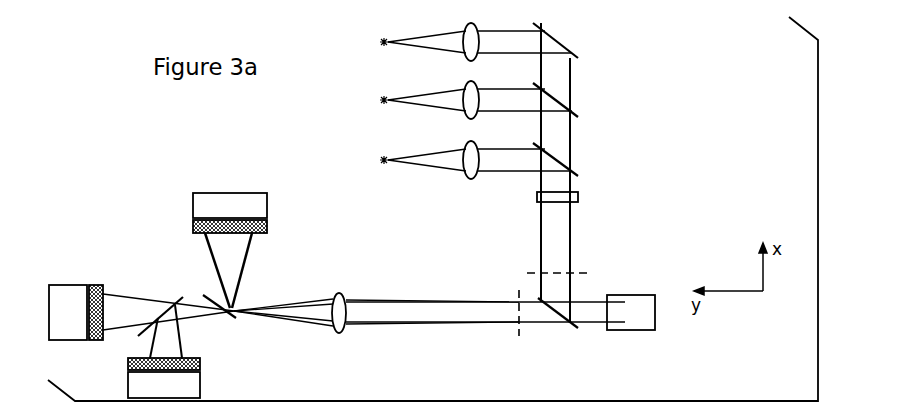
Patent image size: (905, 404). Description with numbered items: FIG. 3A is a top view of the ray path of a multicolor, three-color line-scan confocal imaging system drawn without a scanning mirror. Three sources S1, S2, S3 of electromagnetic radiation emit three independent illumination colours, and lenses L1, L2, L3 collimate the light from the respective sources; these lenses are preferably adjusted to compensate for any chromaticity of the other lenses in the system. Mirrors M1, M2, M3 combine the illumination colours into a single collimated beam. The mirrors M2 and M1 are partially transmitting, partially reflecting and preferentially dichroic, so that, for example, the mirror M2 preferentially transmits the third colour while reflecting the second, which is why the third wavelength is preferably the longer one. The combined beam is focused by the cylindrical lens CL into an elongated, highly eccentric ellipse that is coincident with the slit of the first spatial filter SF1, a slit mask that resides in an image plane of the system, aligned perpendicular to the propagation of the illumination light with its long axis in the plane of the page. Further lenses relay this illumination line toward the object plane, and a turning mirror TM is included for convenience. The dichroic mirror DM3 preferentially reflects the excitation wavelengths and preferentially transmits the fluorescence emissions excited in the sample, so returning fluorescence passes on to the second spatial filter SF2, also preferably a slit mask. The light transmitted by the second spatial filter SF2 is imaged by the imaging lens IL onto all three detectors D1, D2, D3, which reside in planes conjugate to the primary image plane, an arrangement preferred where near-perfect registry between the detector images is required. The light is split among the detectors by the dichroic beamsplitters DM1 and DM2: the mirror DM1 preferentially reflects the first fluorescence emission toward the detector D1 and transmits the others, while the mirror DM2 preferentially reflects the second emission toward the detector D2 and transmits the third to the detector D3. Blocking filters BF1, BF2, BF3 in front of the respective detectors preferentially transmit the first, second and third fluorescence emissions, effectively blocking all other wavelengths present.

The source S1 is at (380, 148).
The source S2 is at (380, 88).
The source S3 is at (380, 30).
The collimating lens L1 is at (480, 152).
The collimating lens L2 is at (480, 91).
The collimating lens L3 is at (480, 31).
The mirror M1 is at (567, 161).
The mirror M2 is at (567, 101).
The mirror M3 is at (567, 41).
The cylindrical lens CL is at (540, 197).
The first spatial filter SF1 is at (574, 277).
The second spatial filter SF2 is at (492, 305).
The dichroic mirror DM1 is at (236, 318).
The dichroic mirror DM2 is at (187, 301).
The dichroic mirror DM3 is at (557, 330).
The turning mirror TM is at (642, 325).
The imaging lens IL is at (291, 302).
The detector D1 is at (230, 206).
The detector D2 is at (164, 386).
The detector D3 is at (68, 328).
The blocking filter BF1 is at (249, 264).
The blocking filter BF2 is at (184, 346).
The blocking filter BF3 is at (153, 301).